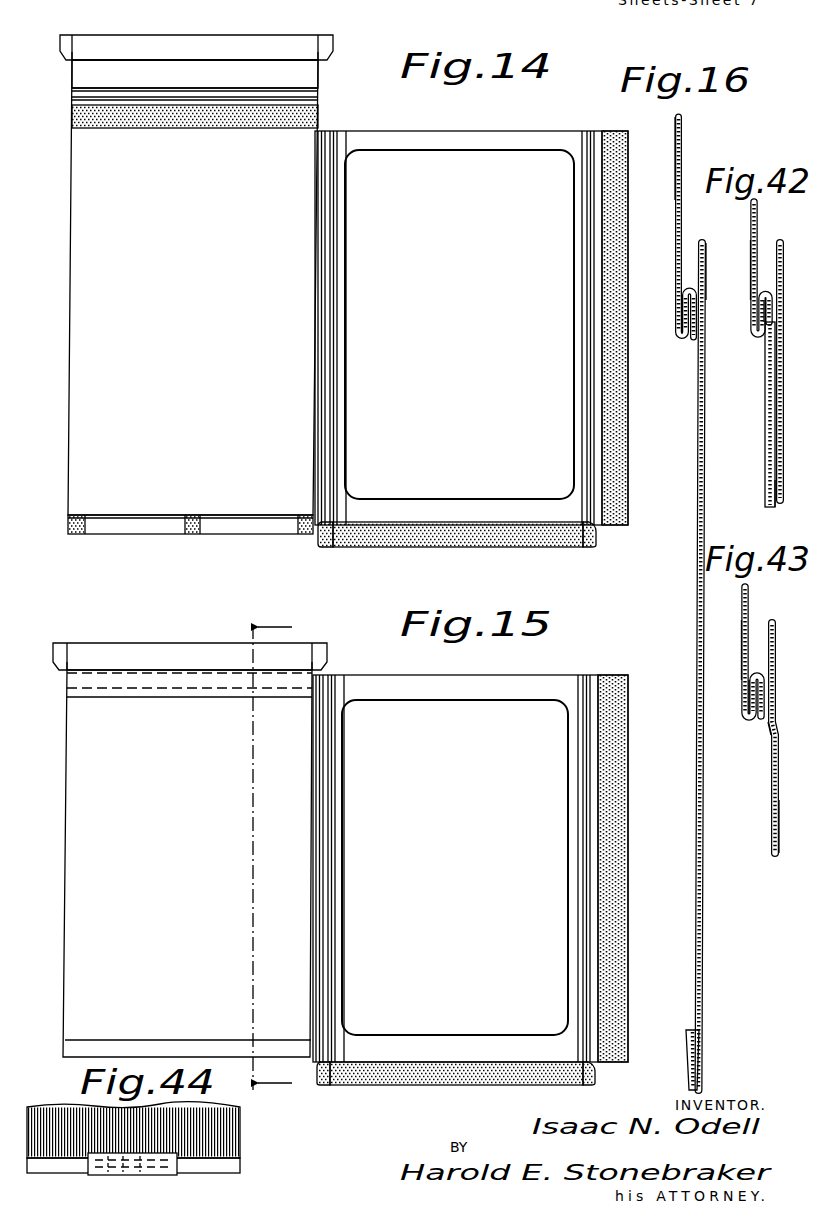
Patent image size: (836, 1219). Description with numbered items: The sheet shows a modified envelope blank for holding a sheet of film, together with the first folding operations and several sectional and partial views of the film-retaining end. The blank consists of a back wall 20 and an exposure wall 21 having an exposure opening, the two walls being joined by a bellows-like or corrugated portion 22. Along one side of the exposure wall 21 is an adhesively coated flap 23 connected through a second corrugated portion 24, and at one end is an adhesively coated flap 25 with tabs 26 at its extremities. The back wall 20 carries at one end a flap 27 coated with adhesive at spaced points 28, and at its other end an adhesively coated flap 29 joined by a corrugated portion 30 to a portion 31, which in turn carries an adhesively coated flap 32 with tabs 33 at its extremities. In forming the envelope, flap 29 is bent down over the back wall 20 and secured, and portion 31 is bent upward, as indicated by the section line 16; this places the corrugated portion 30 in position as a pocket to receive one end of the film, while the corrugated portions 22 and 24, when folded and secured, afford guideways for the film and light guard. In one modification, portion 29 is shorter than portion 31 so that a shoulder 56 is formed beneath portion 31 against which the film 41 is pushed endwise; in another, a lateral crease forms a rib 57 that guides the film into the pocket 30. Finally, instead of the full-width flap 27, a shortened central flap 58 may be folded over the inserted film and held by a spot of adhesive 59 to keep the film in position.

In FIG. 14, the back wall 20 is at (72, 250).
In FIG. 15, the back wall 20 is at (72, 915).
In FIG. 44, the back wall 20 is at (240, 1170).
In FIG. 16, the back wall 20 is at (707, 502).
In FIG. 42, the back wall 20 is at (778, 500).
In FIG. 43, the back wall 20 is at (771, 812).
In FIG. 14, the exposure wall 21 is at (452, 138).
In FIG. 15, the exposure wall 21 is at (466, 685).
In FIG. 14, the bellows-like or corrugated portion 22 is at (330, 306).
In FIG. 15, the bellows-like or corrugated portion 22 is at (345, 958).
In FIG. 14, the adhesively coated flap 23 is at (620, 502).
In FIG. 15, the adhesively coated flap 23 is at (618, 958).
In FIG. 14, the bellows-like or corrugated portion 24 is at (590, 340).
In FIG. 15, the bellows-like or corrugated portion 24 is at (588, 855).
In FIG. 14, the adhesively coated flap 25 is at (546, 545).
In FIG. 15, the adhesively coated flap 25 is at (415, 1080).
In FIG. 14, the tabs 26 is at (324, 547).
In FIG. 15, the tabs 26 is at (321, 1083).
In FIG. 14, the flap 27 is at (146, 530).
In FIG. 15, the flap 27 is at (171, 1040).
In FIG. 16, the flap 27 is at (688, 1040).
In FIG. 14, the spaced points of adhesive 28 is at (68, 528).
In FIG. 14, the adhesively coated flap 29 is at (240, 118).
In FIG. 16, the adhesively coated flap 29 is at (708, 258).
In FIG. 42, the adhesively coated flap 29 is at (784, 252).
In FIG. 43, the adhesively coated flap 29 is at (778, 636).
In FIG. 14, the bellows-like or corrugated portion 30 is at (322, 96).
In FIG. 15, the bellows-like or corrugated portion 30 is at (156, 680).
In FIG. 16, the bellows-like or corrugated portion 30 is at (686, 340).
In FIG. 43, the bellows-like or corrugated portion 30 is at (752, 688).
In FIG. 14, the portion 31 is at (183, 70).
In FIG. 15, the portion 31 is at (214, 684).
In FIG. 16, the portion 31 is at (676, 262).
In FIG. 42, the portion 31 is at (752, 258).
In FIG. 43, the portion 31 is at (742, 650).
In FIG. 14, the adhesively coated flap 32 is at (285, 43).
In FIG. 15, the adhesively coated flap 32 is at (154, 652).
In FIG. 16, the adhesively coated flap 32 is at (684, 150).
In FIG. 42, the adhesively coated flap 32 is at (760, 228).
In FIG. 43, the adhesively coated flap 32 is at (750, 618).
In FIG. 14, the tabs 33 is at (66, 45).
In FIG. 15, the tabs 33 is at (57, 650).
In FIG. 44, the film 41 is at (232, 1136).
In FIG. 42, the film 41 is at (768, 385).
In FIG. 42, the shoulder 56 is at (770, 322).
In FIG. 43, the rib 57 is at (764, 736).
In FIG. 44, the shortened flap 58 is at (172, 1176).
In FIG. 44, the spot of adhesive 59 is at (118, 1166).
In FIG. 15, the section line 16 is at (262, 618).